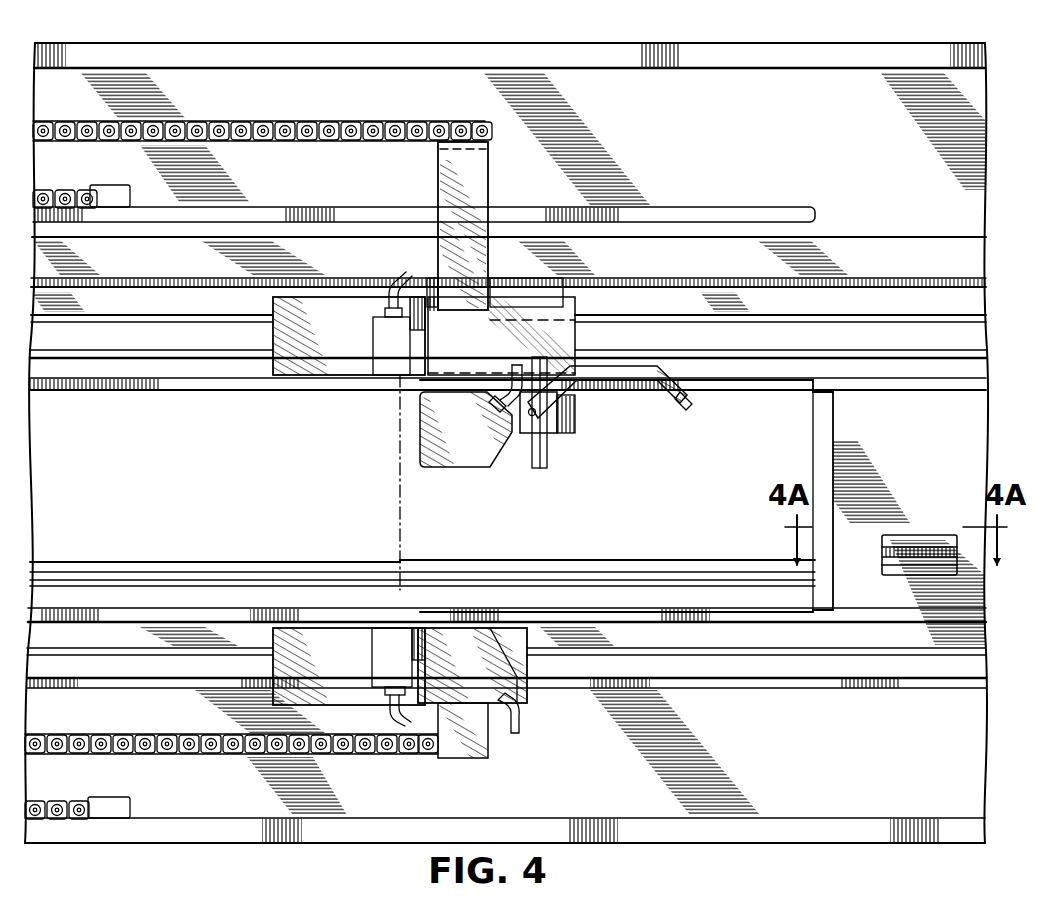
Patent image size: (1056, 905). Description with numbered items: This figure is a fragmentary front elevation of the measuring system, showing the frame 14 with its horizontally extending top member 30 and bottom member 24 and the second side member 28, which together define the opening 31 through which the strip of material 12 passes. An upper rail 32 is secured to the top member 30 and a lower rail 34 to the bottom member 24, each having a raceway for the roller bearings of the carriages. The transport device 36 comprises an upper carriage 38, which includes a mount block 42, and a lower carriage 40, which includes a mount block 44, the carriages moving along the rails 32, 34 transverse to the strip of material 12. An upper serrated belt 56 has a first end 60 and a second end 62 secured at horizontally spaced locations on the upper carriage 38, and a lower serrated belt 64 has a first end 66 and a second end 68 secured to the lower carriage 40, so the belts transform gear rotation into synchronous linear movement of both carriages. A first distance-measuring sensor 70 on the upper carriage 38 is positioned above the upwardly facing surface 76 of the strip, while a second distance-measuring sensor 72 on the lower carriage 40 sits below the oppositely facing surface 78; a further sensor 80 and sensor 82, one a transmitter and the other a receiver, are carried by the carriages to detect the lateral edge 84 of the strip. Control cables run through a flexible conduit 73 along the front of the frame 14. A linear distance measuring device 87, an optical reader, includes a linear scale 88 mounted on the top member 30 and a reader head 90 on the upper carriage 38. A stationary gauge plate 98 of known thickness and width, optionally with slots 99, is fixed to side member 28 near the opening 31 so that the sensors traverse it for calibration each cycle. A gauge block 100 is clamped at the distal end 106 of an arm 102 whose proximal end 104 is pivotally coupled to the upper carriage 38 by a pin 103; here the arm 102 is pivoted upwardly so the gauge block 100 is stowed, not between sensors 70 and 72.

The strip of material 12 is at (166, 559).
The frame 14 is at (866, 42).
The bottom member 24 is at (620, 792).
The second side member 28 is at (948, 451).
The top member 30 is at (778, 155).
The opening 31 is at (130, 454).
The upper rail 32 is at (936, 360).
The lower rail 34 is at (931, 682).
The transport device 36 is at (300, 414).
The upper carriage 38 is at (270, 366).
The lower carriage 40 is at (532, 700).
The mount block 42 is at (362, 340).
The mount block 44 is at (362, 673).
The upper serrated belt 56 is at (889, 350).
The first end 60 is at (505, 330).
The second end 62 is at (297, 300).
The lower serrated belt 64 is at (889, 668).
The first end 66 is at (517, 655).
The second end 68 is at (283, 675).
The first distance-measuring sensor 70 is at (477, 436).
The second distance-measuring sensor 72 is at (482, 673).
The flexible conduit 73 is at (380, 142).
The first upwardly facing surface 76 is at (88, 560).
The second oppositely facing surface 78 is at (112, 590).
The sensor 80 is at (378, 360).
The sensor 82 is at (377, 640).
The lateral edge 84 is at (407, 562).
The linear distance measuring device 87 is at (598, 232).
The linear scale 88 is at (911, 240).
The reader head 90 is at (552, 300).
The stationary gauge plate 98 is at (940, 534).
The slots 99 is at (932, 572).
The gauge block 100 is at (686, 404).
The arm 102 is at (616, 380).
The pin 103 is at (553, 433).
The proximal end 104 is at (530, 432).
The distal end 106 is at (692, 395).